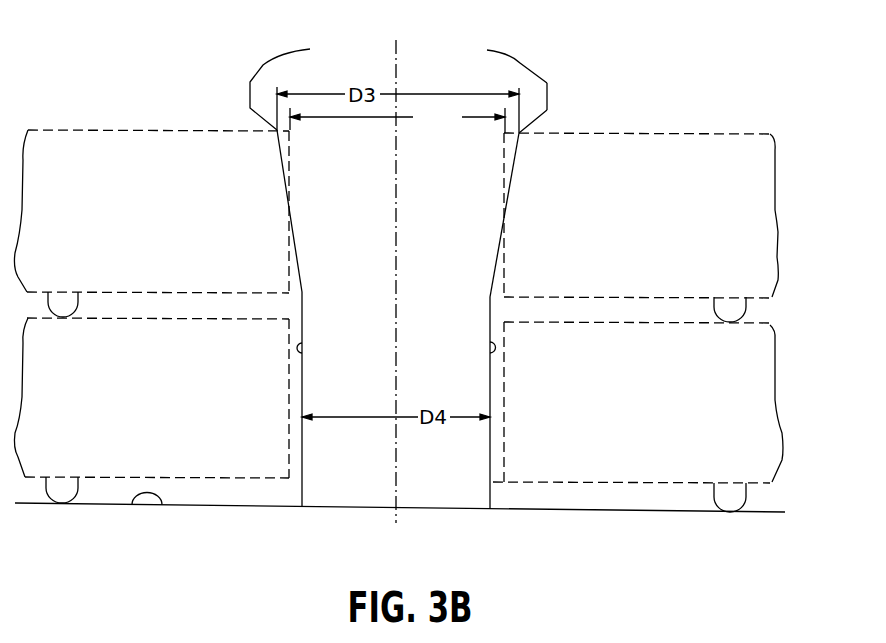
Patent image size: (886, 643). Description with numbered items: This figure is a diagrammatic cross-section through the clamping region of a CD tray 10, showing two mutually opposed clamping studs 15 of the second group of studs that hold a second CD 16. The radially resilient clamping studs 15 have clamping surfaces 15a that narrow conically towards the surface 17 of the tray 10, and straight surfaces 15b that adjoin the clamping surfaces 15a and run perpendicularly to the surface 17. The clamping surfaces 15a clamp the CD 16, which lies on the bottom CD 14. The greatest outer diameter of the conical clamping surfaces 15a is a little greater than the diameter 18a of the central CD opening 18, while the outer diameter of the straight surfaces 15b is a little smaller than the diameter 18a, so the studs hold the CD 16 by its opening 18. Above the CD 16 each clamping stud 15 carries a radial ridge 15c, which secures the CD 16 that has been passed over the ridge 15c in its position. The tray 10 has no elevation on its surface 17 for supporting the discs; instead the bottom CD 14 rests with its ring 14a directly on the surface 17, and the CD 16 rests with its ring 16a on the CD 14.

The tray 10 is at (355, 508).
The first CD 14 is at (607, 323).
The ring of first CD 14a is at (58, 493).
The clamping stud 15 is at (267, 63).
The clamping surface 15a is at (277, 158).
The straight surface 15b is at (305, 353).
The radial ridge 15c is at (547, 97).
The second CD 16 is at (682, 133).
The ring of second CD 16a is at (62, 303).
The surface of tray 17 is at (157, 504).
The central CD opening 18 is at (502, 279).
The diameter of central CD opening 18a is at (397, 119).